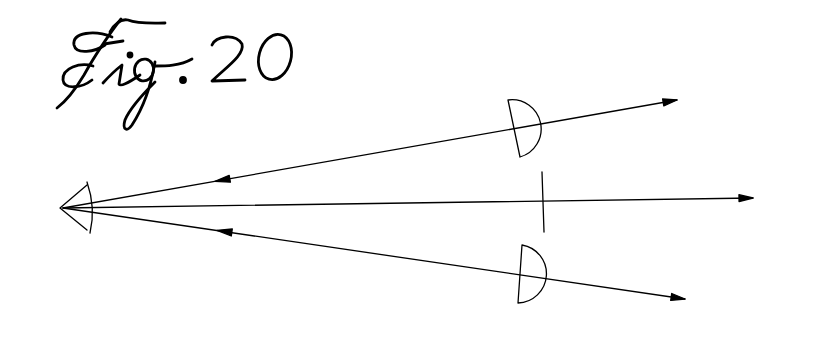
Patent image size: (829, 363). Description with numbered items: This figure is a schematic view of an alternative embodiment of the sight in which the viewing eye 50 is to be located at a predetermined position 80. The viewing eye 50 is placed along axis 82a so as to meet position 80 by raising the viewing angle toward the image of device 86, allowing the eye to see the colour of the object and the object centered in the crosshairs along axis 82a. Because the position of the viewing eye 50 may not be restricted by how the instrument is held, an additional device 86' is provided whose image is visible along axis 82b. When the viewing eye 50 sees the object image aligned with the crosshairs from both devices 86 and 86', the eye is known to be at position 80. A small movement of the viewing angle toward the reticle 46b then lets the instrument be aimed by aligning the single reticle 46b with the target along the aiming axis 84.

The position 80 is at (65, 203).
The viewing eye 50 is at (73, 218).
The axis 82a is at (275, 169).
The axis 82b is at (318, 243).
The aiming axis 84 is at (678, 198).
The device 86 is at (549, 106).
The device 86' is at (498, 294).
The reticle 46b is at (545, 203).